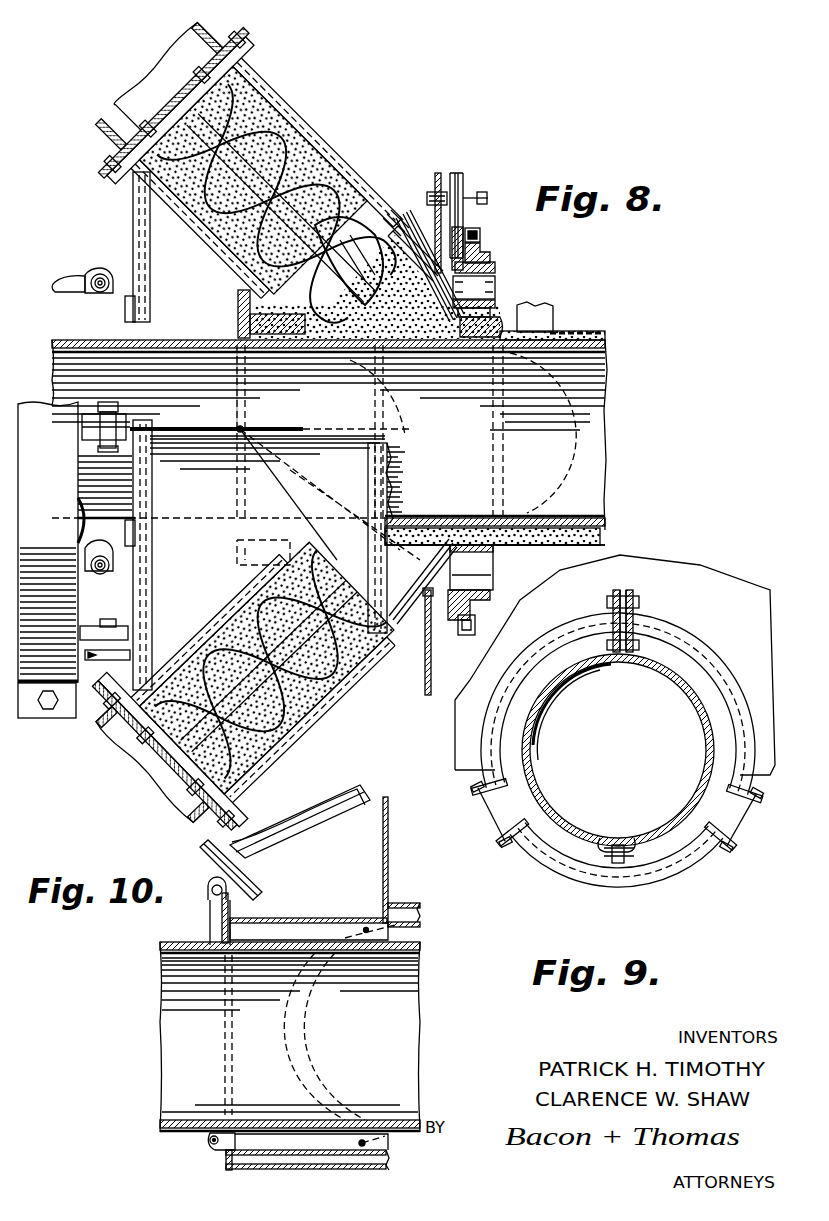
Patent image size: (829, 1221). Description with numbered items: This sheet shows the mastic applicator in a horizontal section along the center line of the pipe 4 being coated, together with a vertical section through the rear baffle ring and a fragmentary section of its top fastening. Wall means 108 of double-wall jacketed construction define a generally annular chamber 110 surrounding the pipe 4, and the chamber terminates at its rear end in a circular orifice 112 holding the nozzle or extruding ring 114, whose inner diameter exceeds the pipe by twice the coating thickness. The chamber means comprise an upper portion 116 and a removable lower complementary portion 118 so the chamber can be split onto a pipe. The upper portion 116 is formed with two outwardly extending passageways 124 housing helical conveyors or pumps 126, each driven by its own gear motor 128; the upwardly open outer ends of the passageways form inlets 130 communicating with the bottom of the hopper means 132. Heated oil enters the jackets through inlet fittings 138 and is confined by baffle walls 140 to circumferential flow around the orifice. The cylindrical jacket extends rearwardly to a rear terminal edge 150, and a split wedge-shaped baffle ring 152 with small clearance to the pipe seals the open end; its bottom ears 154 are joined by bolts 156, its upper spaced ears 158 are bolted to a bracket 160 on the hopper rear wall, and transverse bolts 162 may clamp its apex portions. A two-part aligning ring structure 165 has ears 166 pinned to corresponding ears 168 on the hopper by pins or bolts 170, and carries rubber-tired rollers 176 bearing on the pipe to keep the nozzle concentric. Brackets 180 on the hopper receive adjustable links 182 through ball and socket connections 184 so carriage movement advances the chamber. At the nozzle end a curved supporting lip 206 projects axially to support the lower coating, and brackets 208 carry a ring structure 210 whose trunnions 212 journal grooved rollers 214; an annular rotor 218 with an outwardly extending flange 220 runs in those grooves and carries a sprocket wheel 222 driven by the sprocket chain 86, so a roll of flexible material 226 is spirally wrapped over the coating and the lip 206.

In FIG. 8, the pipe 4 is at (60, 337).
In FIG. 9, the pipe 4 is at (648, 670).
In FIG. 10, the pipe 4 is at (160, 947).
In FIG. 8, the sprocket chain 86 is at (472, 235).
In FIG. 8, the wall means 108 is at (458, 532).
In FIG. 8, the annular chamber 110 is at (423, 532).
In FIG. 8, the circular orifice 112 is at (400, 357).
In FIG. 8, the nozzle or extruding ring 114 is at (495, 544).
In FIG. 9, the upper portion 116 is at (565, 636).
In FIG. 9, the lower complementary portion 118 is at (544, 860).
In FIG. 8, the passageways 124 is at (293, 155).
In FIG. 8, the helical conveyors or pumps 126 is at (246, 112).
In FIG. 8, the gear motor 128 is at (165, 68).
In FIG. 8, the inlets 130 is at (358, 220).
In FIG. 8, the hopper means 132 is at (133, 214).
In FIG. 9, the hopper means 132 is at (690, 580).
In FIG. 10, the hopper means 132 is at (210, 857).
In FIG. 8, the inlet fittings 138 is at (398, 225).
In FIG. 8, the baffle walls 140 is at (488, 433).
In FIG. 8, the rear terminal edge 150 is at (240, 310).
In FIG. 10, the rear terminal edge 150 is at (227, 1164).
In FIG. 8, the baffle ring 152 is at (330, 355).
In FIG. 9, the baffle ring 152 is at (526, 760).
In FIG. 10, the baffle ring 152 is at (345, 977).
In FIG. 8, the ears 154 is at (225, 428).
In FIG. 9, the ears 154 is at (630, 848).
In FIG. 10, the ears 154 is at (210, 1141).
In FIG. 8, the bolts 156 is at (237, 411).
In FIG. 9, the bolts 156 is at (607, 846).
In FIG. 10, the bolts 156 is at (220, 1152).
In FIG. 9, the spaced ears 158 is at (636, 622).
In FIG. 10, the spaced ears 158 is at (210, 912).
In FIG. 9, the bracket 160 is at (620, 597).
In FIG. 10, the bracket 160 is at (220, 890).
In FIG. 8, the transverse bolts 162 is at (388, 408).
In FIG. 10, the transverse bolts 162 is at (360, 925).
In FIG. 8, the annular ring structure 165 is at (28, 700).
In FIG. 8, the ears 166 is at (85, 425).
In FIG. 8, the ears 168 is at (135, 410).
In FIG. 8, the pins or bolts 170 is at (108, 406).
In FIG. 8, the rubber-tired rollers 176 is at (82, 512).
In FIG. 8, the brackets 180 is at (97, 275).
In FIG. 8, the adjustable links 182 is at (68, 280).
In FIG. 8, the ball and socket connections 184 is at (122, 300).
In FIG. 8, the supporting lip 206 is at (604, 403).
In FIG. 8, the brackets 208 is at (410, 233).
In FIG. 8, the ring structure 210 is at (436, 180).
In FIG. 8, the trunnions 212 is at (471, 203).
In FIG. 8, the grooved rollers 214 is at (447, 190).
In FIG. 8, the annular rotor 218 is at (495, 283).
In FIG. 8, the outwardly extending flange 220 is at (428, 240).
In FIG. 8, the sprocket wheel 222 is at (485, 245).
In FIG. 8, the roll of flexible material 226 is at (555, 330).